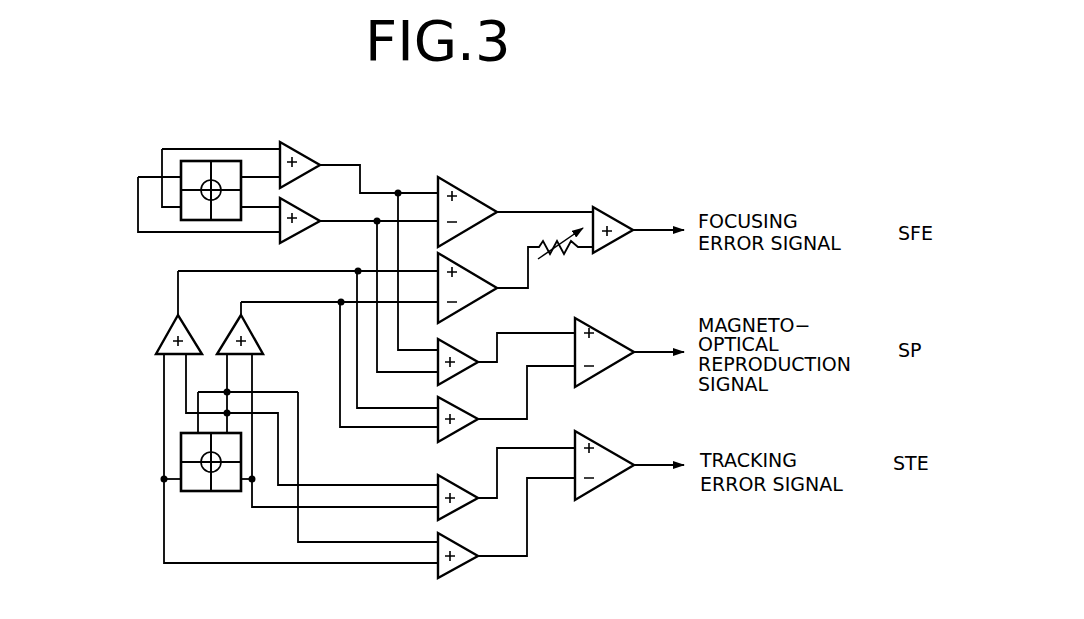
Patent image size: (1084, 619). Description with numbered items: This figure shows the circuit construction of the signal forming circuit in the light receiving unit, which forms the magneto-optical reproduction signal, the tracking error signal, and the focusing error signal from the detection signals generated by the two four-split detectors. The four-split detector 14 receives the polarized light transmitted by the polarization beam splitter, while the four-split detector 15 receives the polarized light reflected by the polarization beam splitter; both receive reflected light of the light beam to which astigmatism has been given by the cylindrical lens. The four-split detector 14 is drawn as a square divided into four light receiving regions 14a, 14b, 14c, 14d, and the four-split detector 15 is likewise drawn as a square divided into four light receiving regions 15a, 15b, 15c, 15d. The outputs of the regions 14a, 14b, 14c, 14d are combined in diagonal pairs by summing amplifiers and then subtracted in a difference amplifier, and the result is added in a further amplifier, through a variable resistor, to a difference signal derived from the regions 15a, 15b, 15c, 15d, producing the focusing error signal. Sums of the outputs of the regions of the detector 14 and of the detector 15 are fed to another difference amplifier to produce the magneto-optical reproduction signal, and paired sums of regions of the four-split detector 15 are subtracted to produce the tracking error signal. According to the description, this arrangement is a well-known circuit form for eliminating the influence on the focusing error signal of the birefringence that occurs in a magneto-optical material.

The 4-split detector 14 is at (135, 197).
The light receiving region of 4-split detector 14 14a is at (193, 168).
The light receiving region of 4-split detector 14 14b is at (227, 168).
The light receiving region of 4-split detector 14 14c is at (223, 210).
The light receiving region of 4-split detector 14 14d is at (197, 210).
The 4-split detector 15 is at (147, 463).
The light receiving region of 4-split detector 15 15a is at (187, 444).
The light receiving region of 4-split detector 15 15b is at (230, 443).
The light receiving region of 4-split detector 15 15c is at (220, 485).
The light receiving region of 4-split detector 15 15d is at (182, 485).